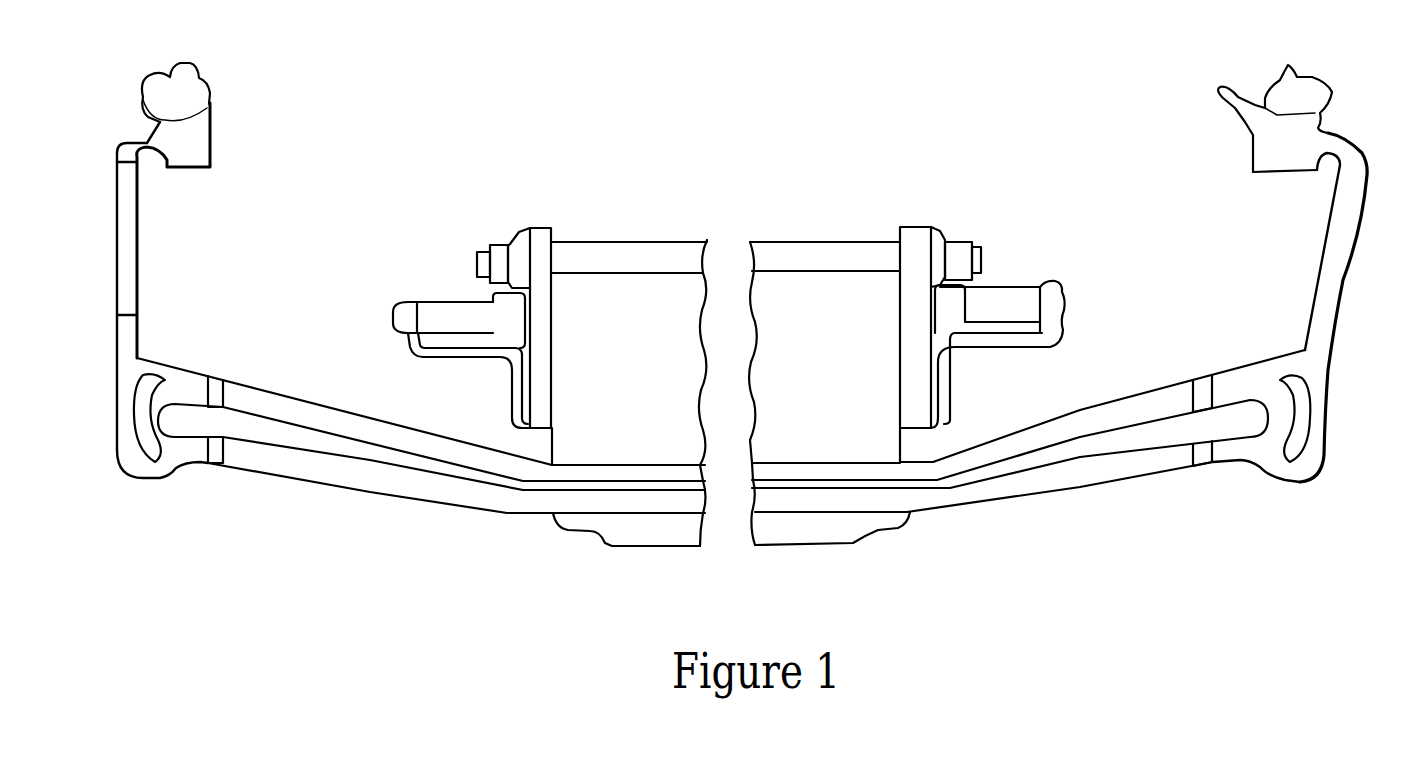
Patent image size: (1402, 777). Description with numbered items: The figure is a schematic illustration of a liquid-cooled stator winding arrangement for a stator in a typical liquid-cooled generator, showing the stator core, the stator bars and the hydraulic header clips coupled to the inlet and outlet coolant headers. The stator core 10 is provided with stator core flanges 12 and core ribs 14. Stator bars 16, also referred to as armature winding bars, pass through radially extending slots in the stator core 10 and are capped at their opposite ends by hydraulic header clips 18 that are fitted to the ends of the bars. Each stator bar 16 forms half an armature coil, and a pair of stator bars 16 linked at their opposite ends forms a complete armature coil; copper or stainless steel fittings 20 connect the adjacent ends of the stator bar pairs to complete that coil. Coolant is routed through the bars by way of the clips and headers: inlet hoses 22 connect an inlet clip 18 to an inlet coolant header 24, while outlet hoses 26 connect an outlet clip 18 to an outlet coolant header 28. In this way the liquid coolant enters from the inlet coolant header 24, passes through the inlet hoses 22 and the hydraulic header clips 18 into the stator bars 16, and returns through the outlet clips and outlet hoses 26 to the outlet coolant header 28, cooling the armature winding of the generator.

The stator core 10 is at (775, 527).
The stator core flanges 12 is at (540, 242).
The core ribs 14 is at (818, 241).
The stator bars 16 is at (327, 407).
The hydraulic header clips 18 is at (213, 378).
The fittings 20 is at (167, 447).
The inlet hoses 22 is at (1323, 258).
The inlet coolant header 24 is at (1275, 153).
The outlet hoses 26 is at (117, 262).
The outlet coolant header 28 is at (203, 152).